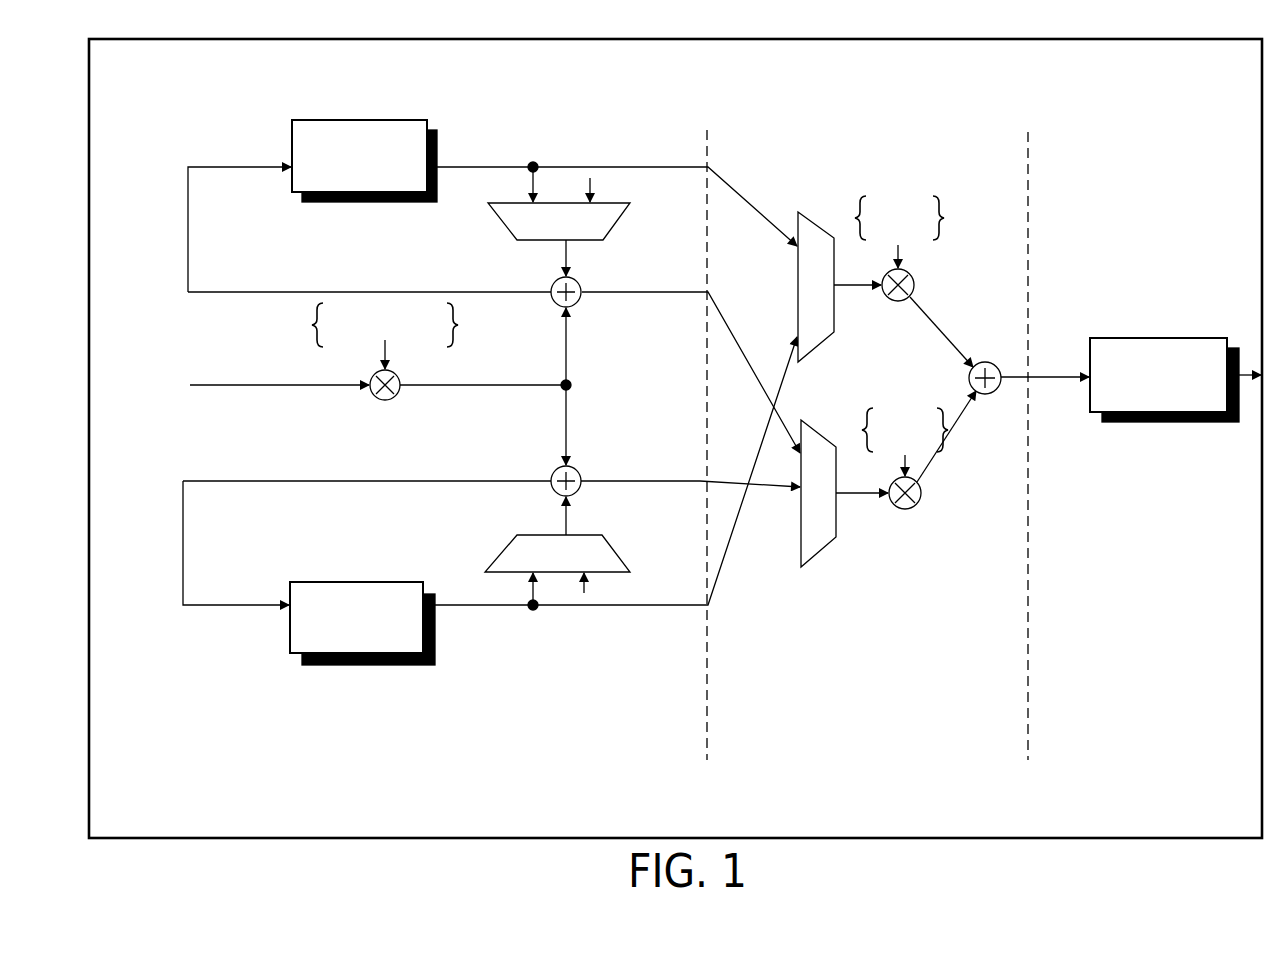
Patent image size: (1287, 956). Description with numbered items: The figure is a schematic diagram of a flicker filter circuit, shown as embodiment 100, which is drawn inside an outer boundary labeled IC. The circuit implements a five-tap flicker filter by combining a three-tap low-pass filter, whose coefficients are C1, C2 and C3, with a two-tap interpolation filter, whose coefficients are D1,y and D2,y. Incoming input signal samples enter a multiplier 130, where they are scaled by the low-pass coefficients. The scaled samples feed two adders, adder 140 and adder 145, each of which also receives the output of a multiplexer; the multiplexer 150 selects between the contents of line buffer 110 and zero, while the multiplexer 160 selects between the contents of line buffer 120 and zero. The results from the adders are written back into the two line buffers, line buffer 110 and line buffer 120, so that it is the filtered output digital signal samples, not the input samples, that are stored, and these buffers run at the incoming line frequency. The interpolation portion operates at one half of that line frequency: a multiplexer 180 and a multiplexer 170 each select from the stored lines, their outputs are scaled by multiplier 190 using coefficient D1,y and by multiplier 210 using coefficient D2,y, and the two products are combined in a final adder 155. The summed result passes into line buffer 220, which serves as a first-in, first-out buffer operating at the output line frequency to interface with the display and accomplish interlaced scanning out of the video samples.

The embodiment 100 is at (677, 426).
The line buffer 110 is at (432, 136).
The line buffer 120 is at (360, 666).
The multiplier 130 is at (386, 401).
The adder 140 is at (554, 308).
The adder 145 is at (604, 464).
The multiplexer 150 is at (494, 224).
The output adder 155 is at (991, 395).
The multiplexer 160 is at (490, 562).
The multiplexer 170 is at (818, 560).
The multiplexer 180 is at (814, 224).
The multiplier 190 is at (899, 302).
The multiplier 210 is at (906, 510).
The line buffer 220 is at (1162, 423).
The integrated circuit IC is at (348, 840).